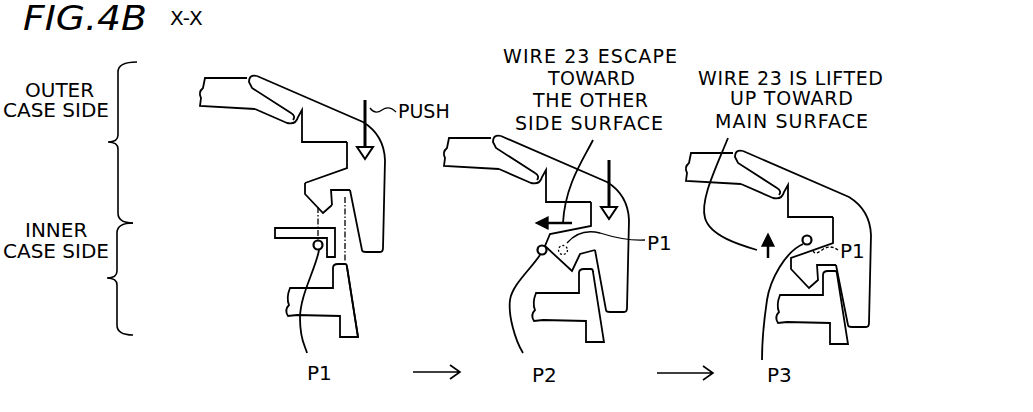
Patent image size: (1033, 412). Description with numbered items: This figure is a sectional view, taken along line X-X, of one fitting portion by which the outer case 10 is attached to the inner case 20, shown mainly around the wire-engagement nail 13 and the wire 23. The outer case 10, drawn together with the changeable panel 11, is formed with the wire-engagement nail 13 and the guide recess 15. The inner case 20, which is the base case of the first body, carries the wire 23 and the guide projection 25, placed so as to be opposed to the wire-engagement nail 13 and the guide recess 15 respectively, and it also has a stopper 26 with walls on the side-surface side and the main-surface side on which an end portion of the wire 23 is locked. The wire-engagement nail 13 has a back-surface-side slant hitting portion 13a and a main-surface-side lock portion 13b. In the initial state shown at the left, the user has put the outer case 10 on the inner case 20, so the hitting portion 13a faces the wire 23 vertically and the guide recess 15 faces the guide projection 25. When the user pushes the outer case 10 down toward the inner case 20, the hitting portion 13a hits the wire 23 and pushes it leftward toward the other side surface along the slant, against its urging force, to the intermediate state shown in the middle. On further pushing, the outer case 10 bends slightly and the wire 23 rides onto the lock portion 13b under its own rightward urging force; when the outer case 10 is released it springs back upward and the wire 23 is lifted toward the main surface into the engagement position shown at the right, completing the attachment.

The outer case 10 is at (350, 88).
The changeable panel 11 is at (202, 92).
The wire-engagement nail 13 is at (313, 188).
The hitting portion 13a is at (320, 205).
The lock portion 13b is at (323, 168).
The guide recess 15 is at (350, 198).
The inner case 20 is at (238, 289).
The wire 23 is at (313, 248).
The guide projection 25 is at (352, 280).
The stopper 26 is at (275, 233).